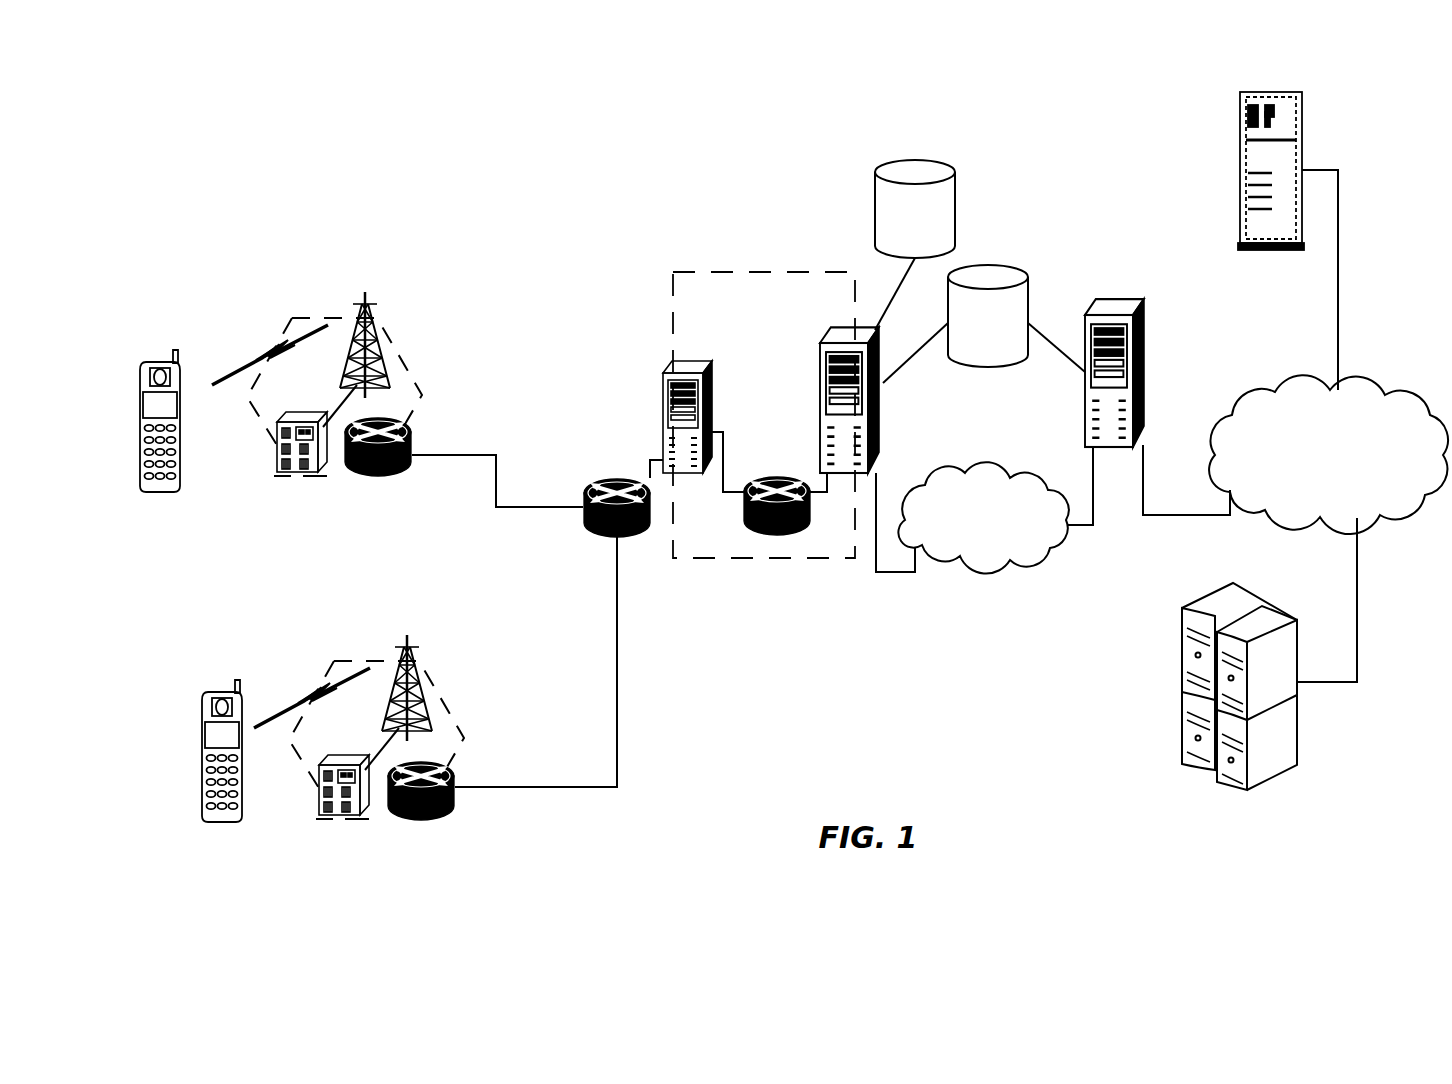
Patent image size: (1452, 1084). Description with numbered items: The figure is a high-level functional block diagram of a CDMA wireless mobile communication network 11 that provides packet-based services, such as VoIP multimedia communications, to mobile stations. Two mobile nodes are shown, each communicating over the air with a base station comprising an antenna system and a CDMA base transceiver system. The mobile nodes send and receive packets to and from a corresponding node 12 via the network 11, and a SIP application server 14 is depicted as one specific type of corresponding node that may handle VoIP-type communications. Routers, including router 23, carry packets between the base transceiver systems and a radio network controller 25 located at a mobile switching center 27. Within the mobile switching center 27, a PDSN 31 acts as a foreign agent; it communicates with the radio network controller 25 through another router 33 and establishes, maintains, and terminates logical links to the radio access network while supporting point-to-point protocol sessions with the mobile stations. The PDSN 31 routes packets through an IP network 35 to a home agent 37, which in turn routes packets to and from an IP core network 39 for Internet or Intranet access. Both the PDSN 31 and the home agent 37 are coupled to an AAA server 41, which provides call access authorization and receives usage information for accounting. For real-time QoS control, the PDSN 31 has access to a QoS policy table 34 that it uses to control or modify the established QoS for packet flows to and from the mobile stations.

The wireless mobile communication network 11 is at (385, 213).
The corresponding node 12 is at (1240, 185).
The SIP application server 14 is at (1180, 668).
The router 23 is at (585, 470).
The radio network controller 25 is at (662, 385).
The mobile switching center 27 is at (762, 266).
The PDSN 31 is at (818, 385).
The router 33 is at (770, 475).
The QoS policy table 34 is at (873, 212).
The IP network 35 is at (997, 470).
The home agent 37 is at (1150, 370).
The IP core network 39 is at (1362, 385).
The AAA server 41 is at (992, 262).